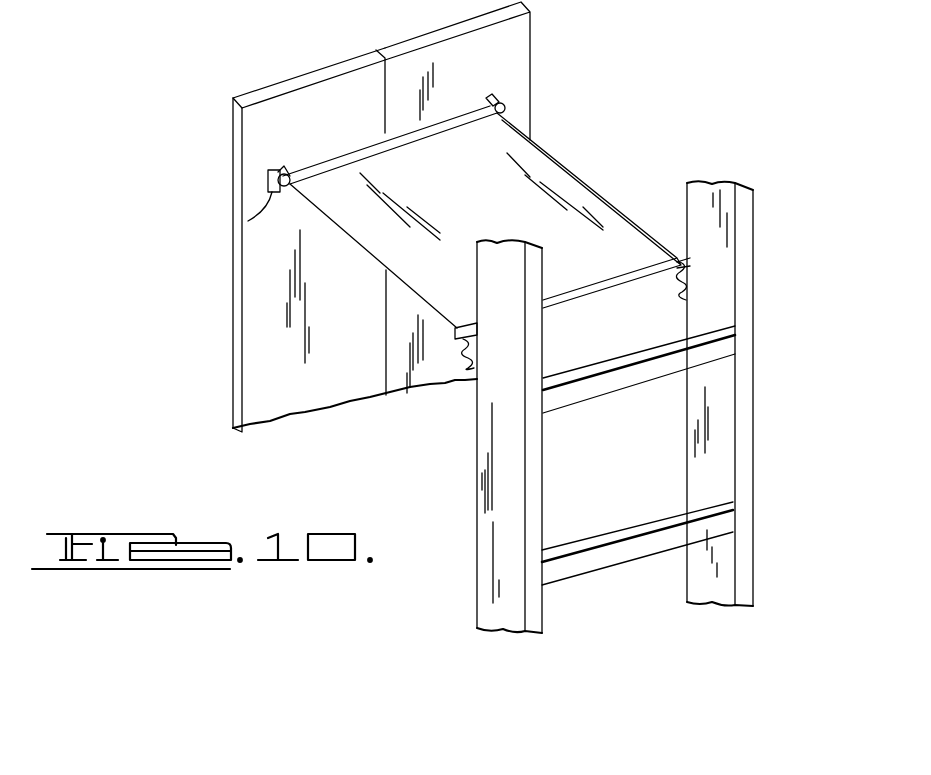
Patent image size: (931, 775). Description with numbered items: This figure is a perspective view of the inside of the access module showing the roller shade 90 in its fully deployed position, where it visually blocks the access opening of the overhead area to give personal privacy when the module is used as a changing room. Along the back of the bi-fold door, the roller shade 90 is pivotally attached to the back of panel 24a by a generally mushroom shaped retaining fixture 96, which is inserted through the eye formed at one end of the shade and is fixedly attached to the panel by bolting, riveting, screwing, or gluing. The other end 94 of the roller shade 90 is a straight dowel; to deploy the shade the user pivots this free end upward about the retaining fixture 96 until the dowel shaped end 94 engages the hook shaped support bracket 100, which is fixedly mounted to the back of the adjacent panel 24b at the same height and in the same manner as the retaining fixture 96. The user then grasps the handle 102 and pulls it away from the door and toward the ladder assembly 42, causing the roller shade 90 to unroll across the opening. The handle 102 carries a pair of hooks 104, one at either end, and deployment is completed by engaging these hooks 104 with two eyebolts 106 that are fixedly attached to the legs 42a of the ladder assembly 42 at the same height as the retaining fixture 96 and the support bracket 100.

The panel 24a is at (502, 66).
The panel 24b is at (333, 124).
The roller shade 90 is at (574, 174).
The end of the roller shade 94 is at (268, 178).
The retaining fixture 96 is at (504, 108).
The support bracket 100 is at (272, 192).
The handle 102 is at (597, 296).
The hooks 104 is at (458, 342).
The eyebolts 106 is at (468, 362).
The ladder assembly 42 is at (478, 470).
The legs 42a is at (535, 471).